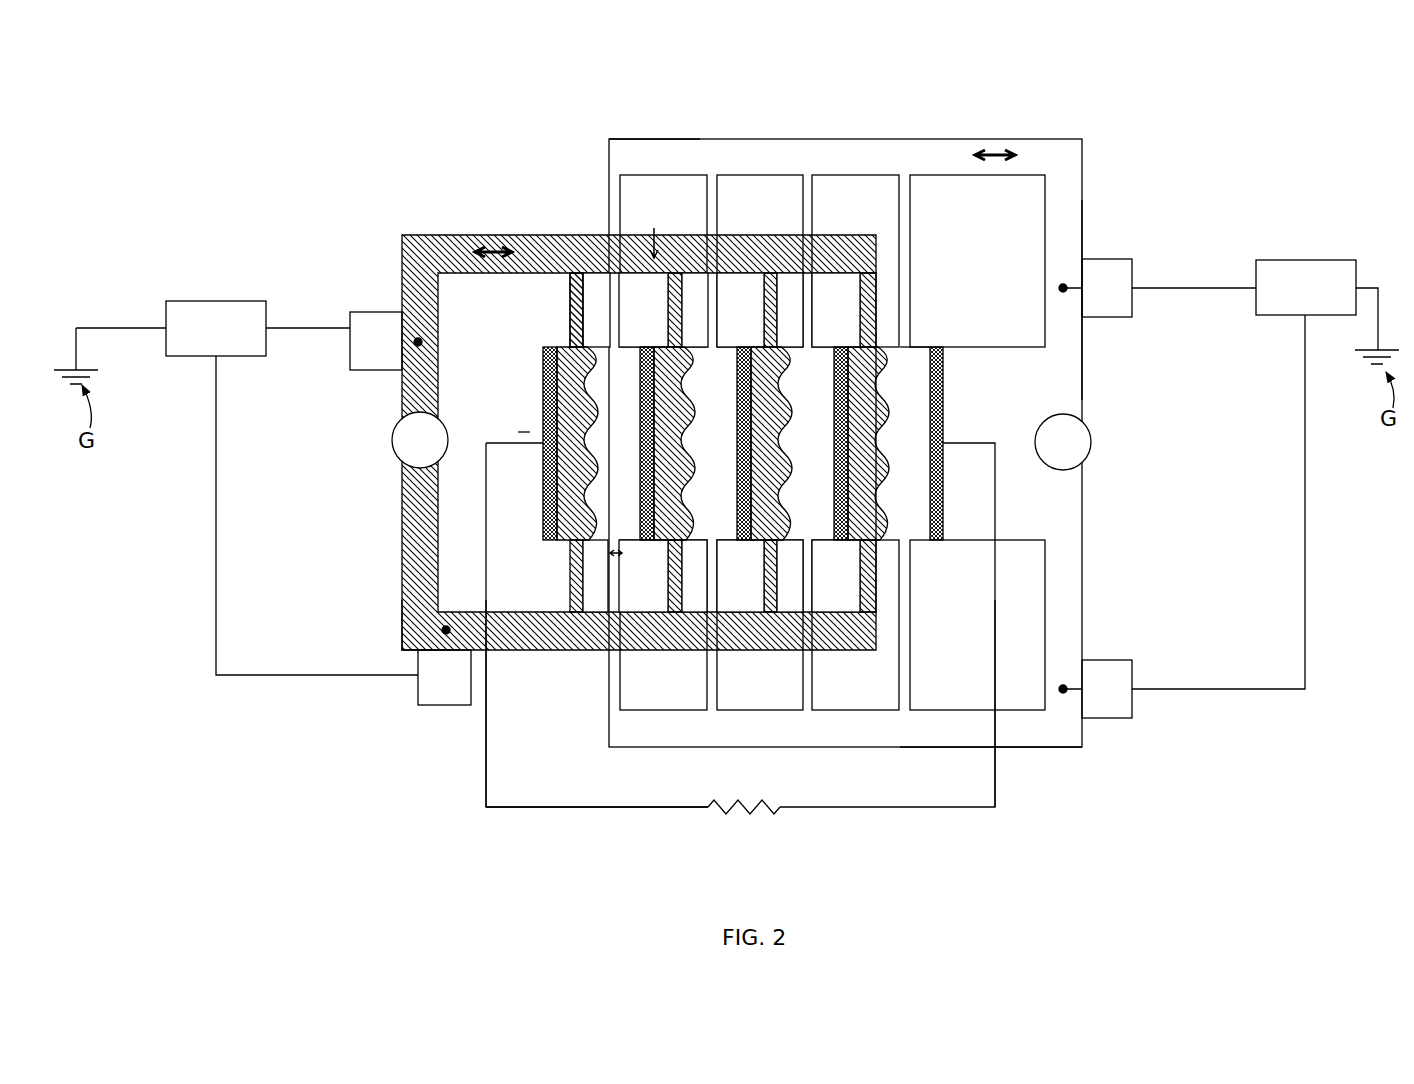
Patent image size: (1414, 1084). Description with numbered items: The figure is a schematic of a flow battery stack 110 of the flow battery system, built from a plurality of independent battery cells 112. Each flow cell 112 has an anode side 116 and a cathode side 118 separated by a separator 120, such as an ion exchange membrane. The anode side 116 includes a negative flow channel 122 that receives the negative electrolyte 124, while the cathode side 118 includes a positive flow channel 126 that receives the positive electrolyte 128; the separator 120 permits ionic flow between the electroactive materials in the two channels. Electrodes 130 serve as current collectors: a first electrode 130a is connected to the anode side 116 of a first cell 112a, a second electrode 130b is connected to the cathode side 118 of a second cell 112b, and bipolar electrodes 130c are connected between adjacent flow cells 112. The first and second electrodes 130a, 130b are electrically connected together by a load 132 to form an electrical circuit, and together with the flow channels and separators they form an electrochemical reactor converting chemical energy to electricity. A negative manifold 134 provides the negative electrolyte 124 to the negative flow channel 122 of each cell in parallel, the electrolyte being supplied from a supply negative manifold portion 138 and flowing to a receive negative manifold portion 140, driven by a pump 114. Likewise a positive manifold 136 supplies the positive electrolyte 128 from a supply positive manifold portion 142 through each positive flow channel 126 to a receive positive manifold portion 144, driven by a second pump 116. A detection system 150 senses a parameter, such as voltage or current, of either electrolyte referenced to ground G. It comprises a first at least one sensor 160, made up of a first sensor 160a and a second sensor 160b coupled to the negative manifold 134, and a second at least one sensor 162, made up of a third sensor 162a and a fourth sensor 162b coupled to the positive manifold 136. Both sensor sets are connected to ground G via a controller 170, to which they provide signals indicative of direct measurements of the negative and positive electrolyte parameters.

The flow battery stack 110 is at (390, 120).
The battery cell 112 is at (934, 346).
The first cell 112a is at (546, 346).
The second cell 112b is at (918, 346).
The pump 114 is at (391, 437).
The anode side 116 is at (1093, 440).
The cathode side 118 is at (633, 546).
The separator 120 is at (590, 468).
The negative flow channel 122 is at (575, 388).
The negative electrolyte 124 is at (402, 264).
The positive flow channel 126 is at (620, 393).
The positive electrolyte 128 is at (1066, 232).
The electrodes 130 is at (948, 394).
The first electrode 130a is at (545, 546).
The second electrode 130b is at (945, 546).
The bipolar electrode 130c is at (744, 546).
The load 132 is at (720, 808).
The negative manifold 134 is at (498, 235).
The positive manifold 136 is at (846, 138).
The supply negative manifold portion 138 is at (562, 235).
The receive negative manifold portion 140 is at (399, 608).
The supply positive manifold portion 142 is at (929, 138).
The receive positive manifold portion 144 is at (1062, 752).
The detection system 150 is at (205, 208).
The first at least one sensor 160 is at (349, 343).
The first sensor 160a is at (351, 312).
The second sensor 160b is at (417, 690).
The second at least one sensor 162 is at (1136, 309).
The third sensor 162a is at (1132, 272).
The fourth sensor 162b is at (1132, 672).
The controller 170 is at (205, 299).